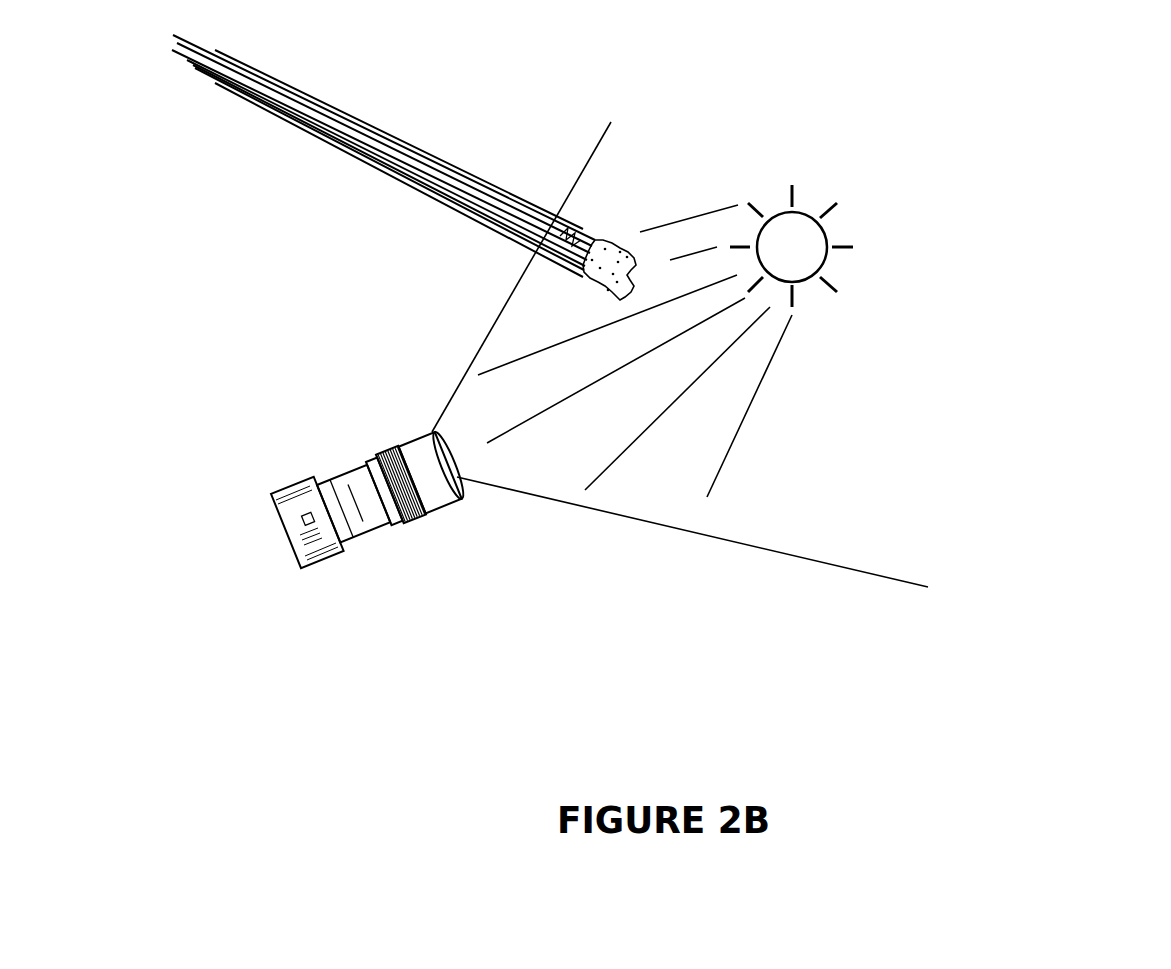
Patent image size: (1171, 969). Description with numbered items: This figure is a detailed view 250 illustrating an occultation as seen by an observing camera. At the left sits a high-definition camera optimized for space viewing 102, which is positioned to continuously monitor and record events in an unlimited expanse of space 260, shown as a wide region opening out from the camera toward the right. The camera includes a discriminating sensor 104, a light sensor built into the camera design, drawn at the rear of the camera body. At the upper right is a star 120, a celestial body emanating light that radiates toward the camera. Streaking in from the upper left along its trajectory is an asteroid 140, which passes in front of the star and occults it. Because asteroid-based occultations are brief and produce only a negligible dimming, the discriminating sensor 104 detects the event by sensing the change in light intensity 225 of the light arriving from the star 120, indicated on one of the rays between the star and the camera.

The asteroid 140 is at (590, 285).
The star 120 is at (814, 232).
The high-definition camera optimized for space viewing 102 is at (407, 448).
The discriminating sensor 104 is at (413, 527).
The change in light intensity 225 is at (635, 440).
The unlimited expanse of space 260 is at (802, 550).
The detailed view 250 is at (946, 648).